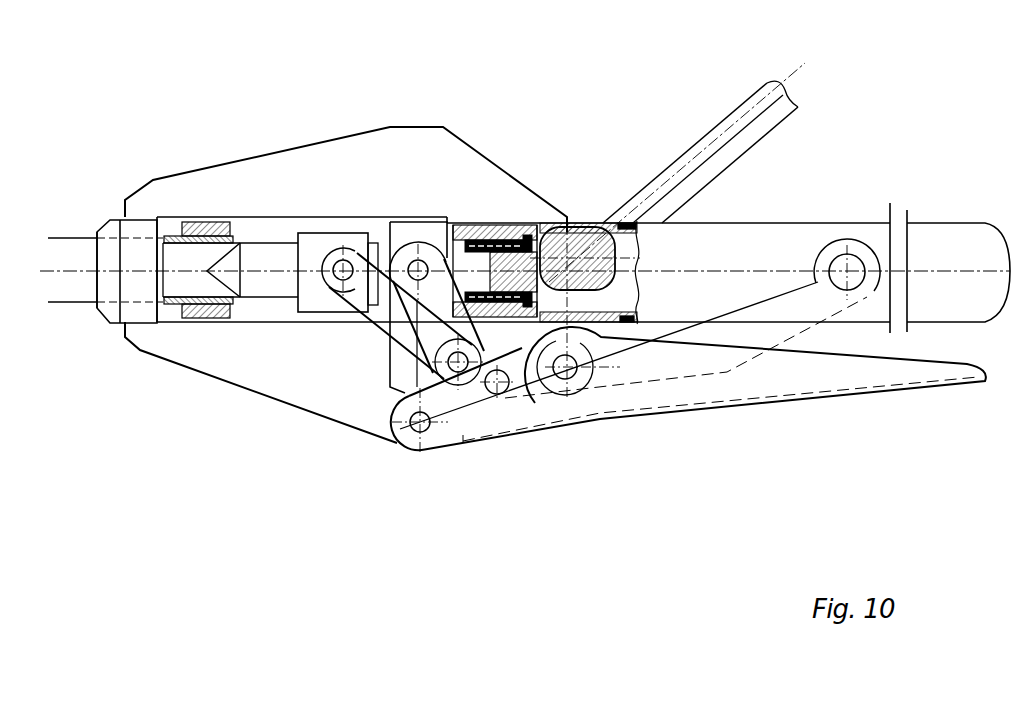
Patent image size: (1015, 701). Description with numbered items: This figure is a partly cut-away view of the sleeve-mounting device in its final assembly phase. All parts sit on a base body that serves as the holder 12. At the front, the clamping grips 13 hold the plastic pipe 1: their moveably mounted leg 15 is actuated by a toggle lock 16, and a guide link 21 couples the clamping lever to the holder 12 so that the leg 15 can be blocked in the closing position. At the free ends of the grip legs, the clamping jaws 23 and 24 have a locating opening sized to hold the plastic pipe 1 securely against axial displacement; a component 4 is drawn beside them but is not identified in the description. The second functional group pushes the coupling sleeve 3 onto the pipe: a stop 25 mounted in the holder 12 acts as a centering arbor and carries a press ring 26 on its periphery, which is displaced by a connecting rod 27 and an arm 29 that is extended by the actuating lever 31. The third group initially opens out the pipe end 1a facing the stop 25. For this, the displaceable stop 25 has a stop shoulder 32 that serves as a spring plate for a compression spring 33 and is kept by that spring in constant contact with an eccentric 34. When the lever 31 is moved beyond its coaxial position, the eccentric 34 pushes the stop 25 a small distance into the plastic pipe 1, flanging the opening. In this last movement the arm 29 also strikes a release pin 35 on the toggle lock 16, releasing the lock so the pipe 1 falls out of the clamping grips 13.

The plastic pipe 1 is at (65, 248).
The pipe end 1a is at (233, 307).
The coupling sleeve 3 is at (168, 307).
The sealing ring 4 is at (207, 222).
The holder 12 is at (772, 242).
The clamping grips 13 is at (190, 226).
The moveably mounted leg 15 is at (298, 385).
The toggle lock 16 is at (702, 417).
The guide link 21 is at (753, 338).
The clamping jaw 23 is at (120, 230).
The clamping jaw 24 is at (117, 313).
The stop 25 is at (253, 260).
The press ring 26 is at (312, 240).
The connecting rod 27 is at (362, 375).
The arm 29 is at (447, 368).
The actuating lever 31 is at (706, 144).
The stop shoulder 32 is at (530, 247).
The compression spring 33 is at (483, 227).
The eccentric 34 is at (612, 215).
The release pin 35 is at (505, 388).